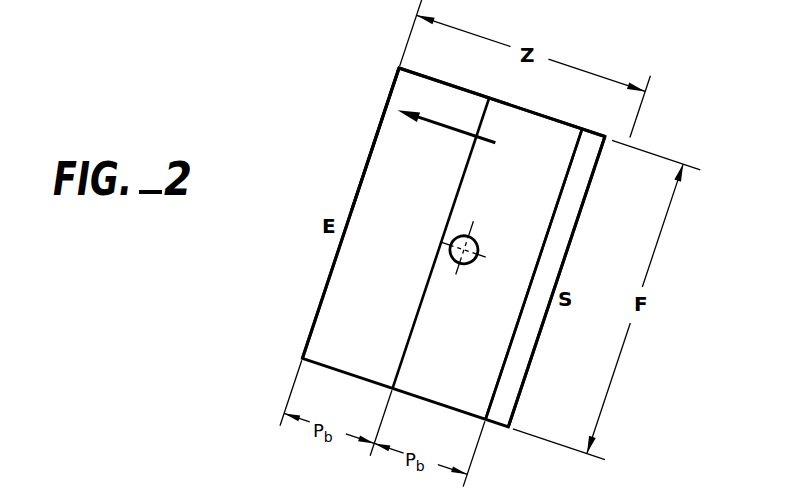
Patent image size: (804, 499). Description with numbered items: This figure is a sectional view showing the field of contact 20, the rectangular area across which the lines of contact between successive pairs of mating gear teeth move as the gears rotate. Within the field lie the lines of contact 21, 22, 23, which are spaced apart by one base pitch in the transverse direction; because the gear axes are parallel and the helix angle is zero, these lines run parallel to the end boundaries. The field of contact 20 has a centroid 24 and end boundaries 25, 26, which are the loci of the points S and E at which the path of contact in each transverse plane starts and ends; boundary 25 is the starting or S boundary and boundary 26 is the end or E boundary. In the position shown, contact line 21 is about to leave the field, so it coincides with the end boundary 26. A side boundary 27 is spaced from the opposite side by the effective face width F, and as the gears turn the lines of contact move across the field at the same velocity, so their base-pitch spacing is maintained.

The field of contact 20 is at (562, 146).
The line of contact 21 is at (359, 191).
The line of contact 22 is at (421, 307).
The line of contact 23 is at (500, 373).
The centroid 24 is at (473, 240).
The end boundary 25 is at (568, 253).
The end boundary 26 is at (369, 158).
The side boundary 27 is at (421, 75).